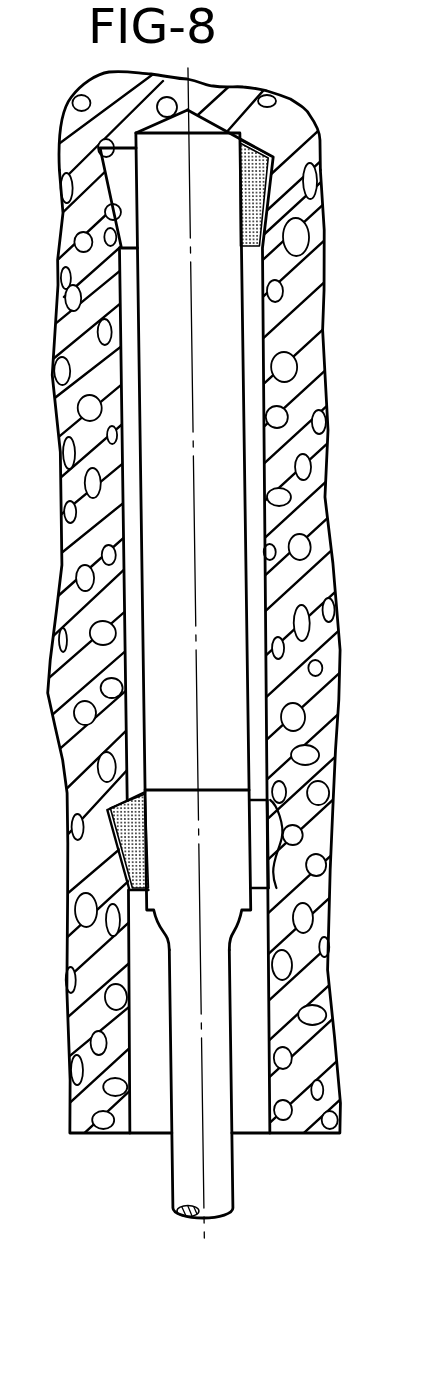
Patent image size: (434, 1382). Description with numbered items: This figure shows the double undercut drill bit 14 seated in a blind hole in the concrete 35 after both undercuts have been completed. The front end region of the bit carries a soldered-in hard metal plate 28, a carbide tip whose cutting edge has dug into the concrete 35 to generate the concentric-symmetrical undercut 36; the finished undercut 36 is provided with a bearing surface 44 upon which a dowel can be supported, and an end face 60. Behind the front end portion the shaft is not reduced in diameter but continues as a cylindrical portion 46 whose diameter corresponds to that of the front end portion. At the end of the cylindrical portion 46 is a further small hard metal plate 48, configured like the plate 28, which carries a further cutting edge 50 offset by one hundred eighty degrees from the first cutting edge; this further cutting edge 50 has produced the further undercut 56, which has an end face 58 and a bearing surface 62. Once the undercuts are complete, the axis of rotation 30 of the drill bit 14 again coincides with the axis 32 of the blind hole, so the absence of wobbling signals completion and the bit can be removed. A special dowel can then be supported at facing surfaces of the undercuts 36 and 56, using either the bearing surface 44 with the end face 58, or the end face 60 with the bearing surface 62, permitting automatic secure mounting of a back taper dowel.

The drill bit 14 is at (152, 1183).
The hard metal plate 28 is at (273, 171).
The axis of rotation 30 is at (283, 686).
The axis of the blind hole 32 is at (198, 870).
The concrete 35 is at (53, 458).
The undercut 36 is at (57, 267).
The bearing surface 44 is at (58, 217).
The cylindrical portion 46 is at (228, 330).
The further small hard metal plate 48 is at (99, 808).
The further cutting edge 50 is at (103, 858).
The further undercut 56 is at (263, 850).
The end face of the further undercut 58 is at (259, 808).
The end face of the undercut 60 is at (59, 166).
The bearing surface of the further undercut 62 is at (241, 887).